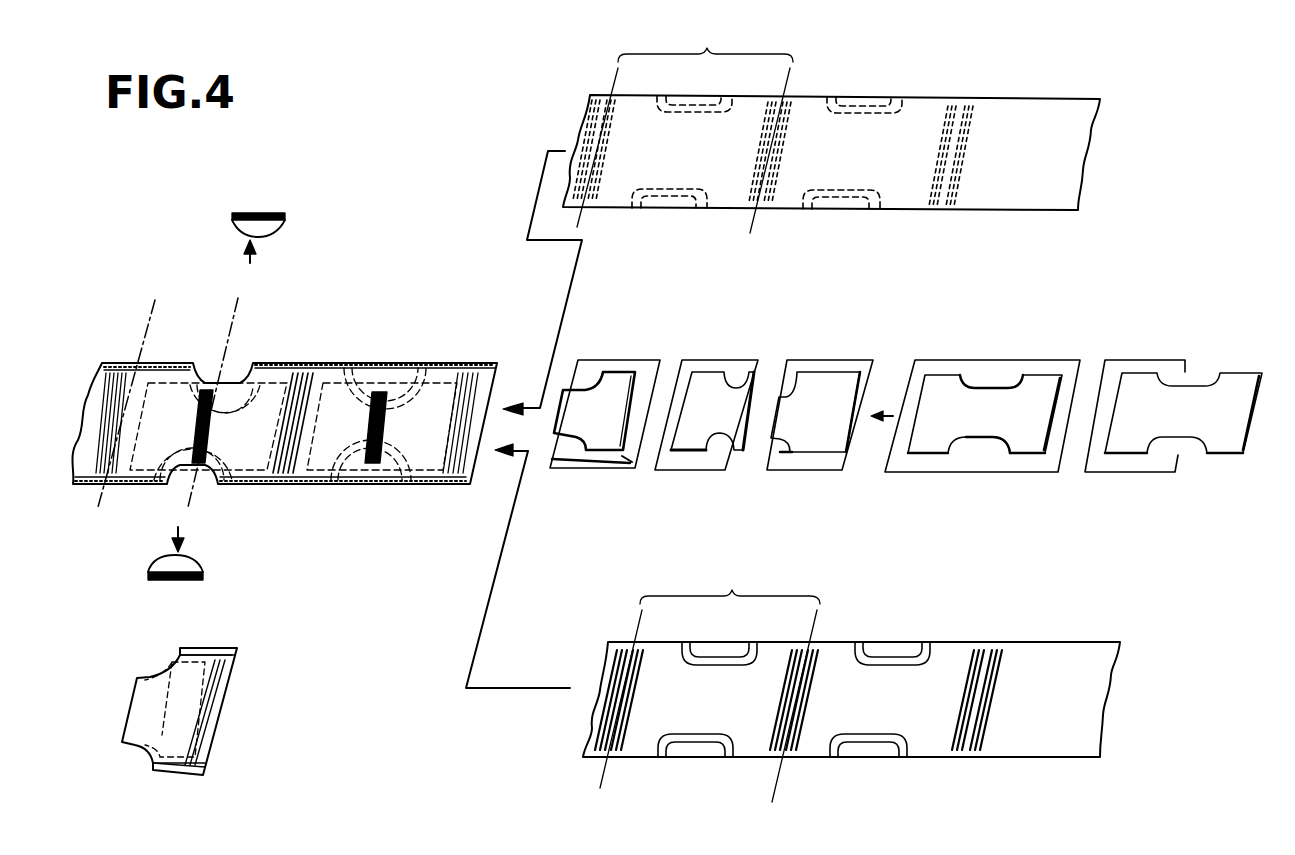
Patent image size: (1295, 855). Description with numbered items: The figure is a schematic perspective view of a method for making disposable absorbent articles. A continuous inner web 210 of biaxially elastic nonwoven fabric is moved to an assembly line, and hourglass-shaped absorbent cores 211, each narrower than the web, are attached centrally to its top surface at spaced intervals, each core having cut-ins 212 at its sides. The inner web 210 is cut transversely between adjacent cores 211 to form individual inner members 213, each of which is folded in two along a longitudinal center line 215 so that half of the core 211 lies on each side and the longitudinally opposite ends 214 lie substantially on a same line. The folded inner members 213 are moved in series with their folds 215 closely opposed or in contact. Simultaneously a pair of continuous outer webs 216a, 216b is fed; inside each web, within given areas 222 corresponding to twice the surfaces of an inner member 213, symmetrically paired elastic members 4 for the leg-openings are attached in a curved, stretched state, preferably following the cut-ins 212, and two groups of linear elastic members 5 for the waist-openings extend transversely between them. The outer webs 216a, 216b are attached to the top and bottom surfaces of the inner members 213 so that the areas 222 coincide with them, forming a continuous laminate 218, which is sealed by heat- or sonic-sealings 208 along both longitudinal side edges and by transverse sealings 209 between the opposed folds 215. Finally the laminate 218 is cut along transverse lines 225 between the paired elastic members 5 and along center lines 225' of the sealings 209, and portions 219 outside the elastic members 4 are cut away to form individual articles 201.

The elastic member for the leg-opening 4 is at (688, 112).
The elastic member for the waist-opening 5 is at (607, 195).
The individual article 201 is at (140, 655).
The heat- or sonic-sealing 208 is at (457, 367).
The heat- or sonic-sealing 209 is at (205, 433).
The inner web 210 is at (933, 465).
The absorbent core 211 is at (707, 388).
The cut-in 212 is at (997, 384).
The inner member 213 is at (643, 338).
The longitudinally opposite ends 214 is at (620, 470).
The longitudinal center line 215 is at (552, 462).
The outer web 216a is at (1045, 153).
The outer web 216b is at (1088, 705).
The continuous laminate 218 is at (364, 346).
The portion extending outside the elastic members 219 is at (260, 217).
The given area 222 is at (698, 411).
The transverse line 225 is at (115, 387).
The center line of transverse sealing 225' is at (205, 387).